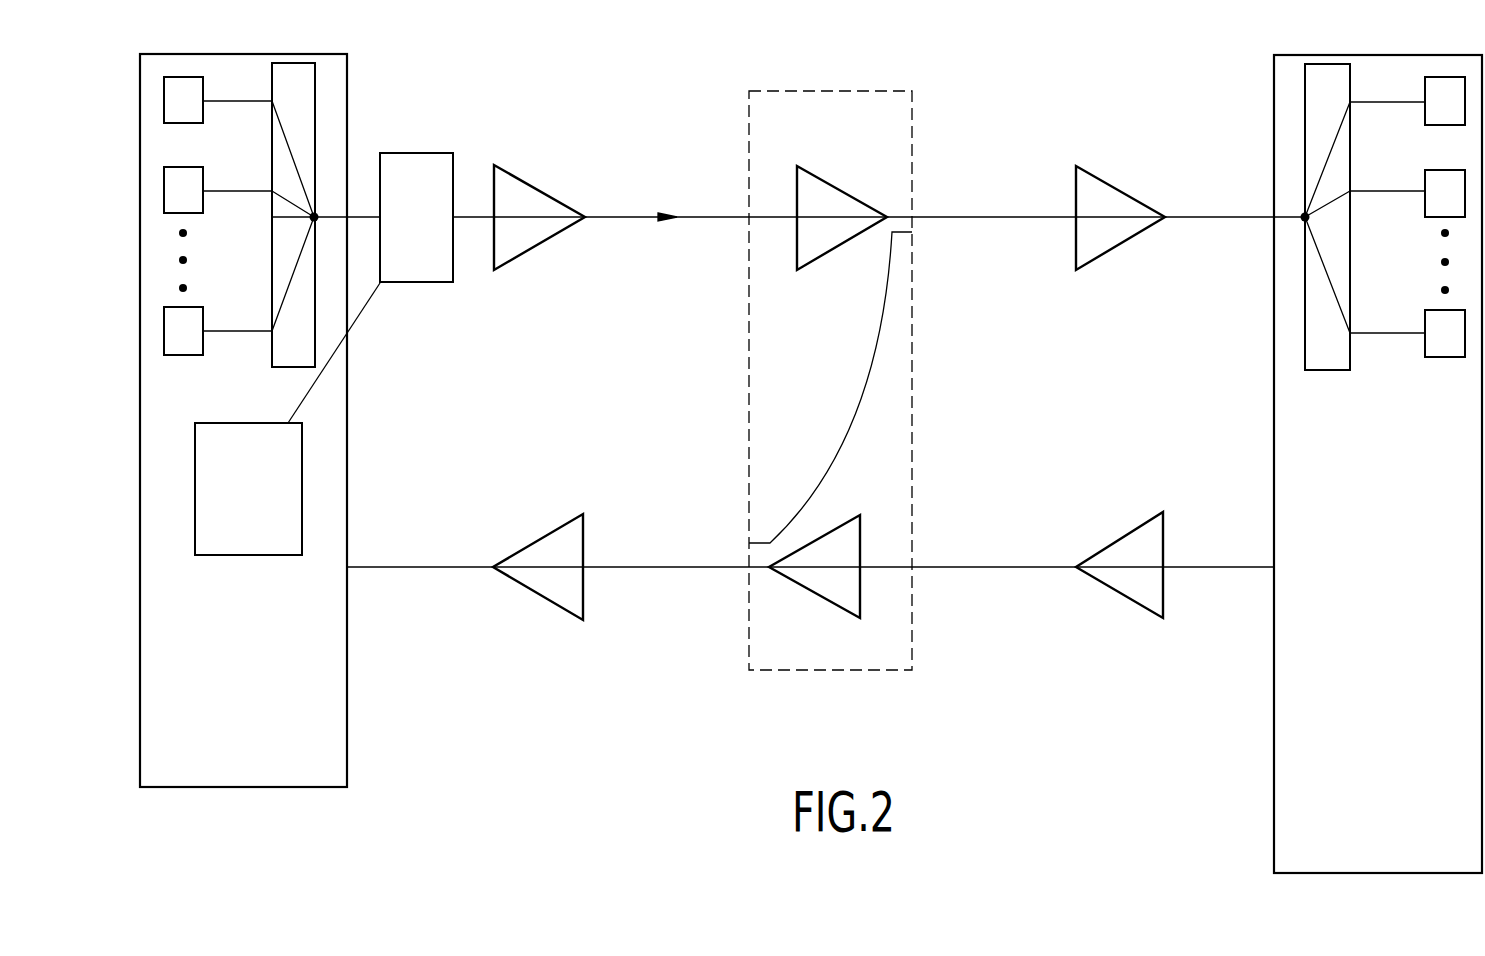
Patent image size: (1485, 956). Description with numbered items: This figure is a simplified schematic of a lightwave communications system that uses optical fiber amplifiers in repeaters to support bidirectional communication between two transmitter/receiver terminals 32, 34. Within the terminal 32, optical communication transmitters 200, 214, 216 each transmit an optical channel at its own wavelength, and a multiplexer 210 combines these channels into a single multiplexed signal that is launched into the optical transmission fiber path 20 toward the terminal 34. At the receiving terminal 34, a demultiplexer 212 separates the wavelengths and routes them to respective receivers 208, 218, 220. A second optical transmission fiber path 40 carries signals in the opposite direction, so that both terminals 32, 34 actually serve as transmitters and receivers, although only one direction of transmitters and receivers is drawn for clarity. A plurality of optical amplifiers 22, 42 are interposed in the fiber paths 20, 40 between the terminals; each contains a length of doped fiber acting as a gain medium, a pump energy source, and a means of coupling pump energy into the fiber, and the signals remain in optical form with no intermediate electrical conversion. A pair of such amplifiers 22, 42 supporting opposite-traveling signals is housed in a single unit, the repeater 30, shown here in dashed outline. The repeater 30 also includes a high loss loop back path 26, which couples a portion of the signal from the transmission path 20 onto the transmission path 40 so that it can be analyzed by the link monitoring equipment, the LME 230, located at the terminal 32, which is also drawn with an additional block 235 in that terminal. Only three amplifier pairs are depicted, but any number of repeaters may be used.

The optical transmission fiber path 20 is at (697, 217).
The optical amplifier 22 is at (538, 188).
The high loss loop back path 26 is at (880, 320).
The repeater 30 is at (913, 113).
The transmitter/receiver terminal 32 is at (347, 760).
The transmitter/receiver terminal 34 is at (1275, 750).
The optical transmission fiber path 40 is at (948, 568).
The optical amplifier 42 is at (535, 540).
The optical communication transmitter 200 is at (203, 90).
The receiver 208 is at (1425, 117).
The multiplexer 210 is at (315, 77).
The demultiplexer 212 is at (1305, 82).
The optical communication transmitter 214 is at (203, 178).
The optical communication transmitter 216 is at (203, 318).
The receiver 218 is at (1425, 205).
The receiver 220 is at (1425, 343).
The link management entity 230 is at (247, 555).
The optical transmitter 235 is at (417, 282).